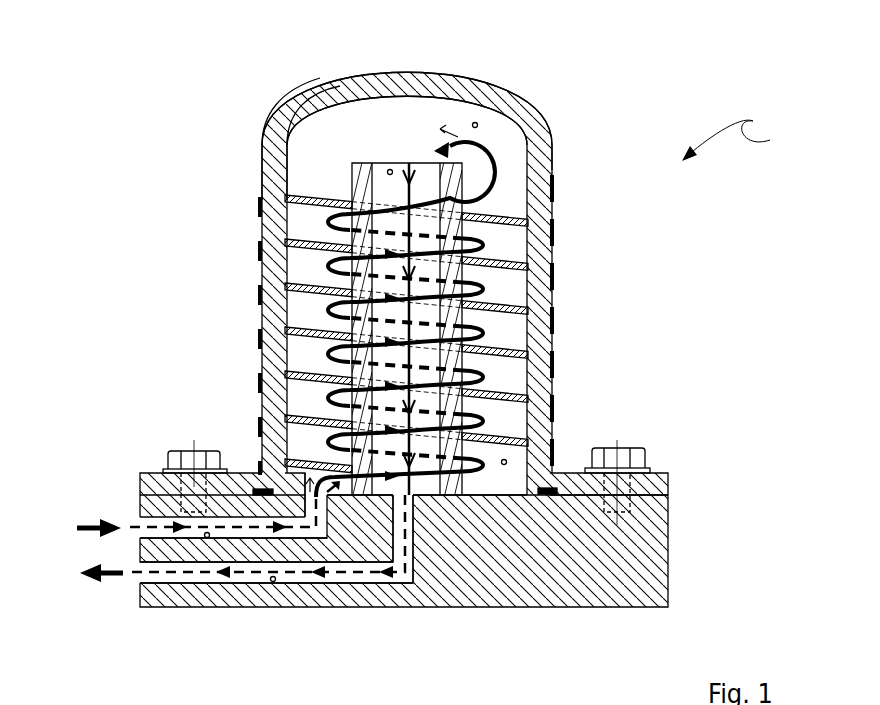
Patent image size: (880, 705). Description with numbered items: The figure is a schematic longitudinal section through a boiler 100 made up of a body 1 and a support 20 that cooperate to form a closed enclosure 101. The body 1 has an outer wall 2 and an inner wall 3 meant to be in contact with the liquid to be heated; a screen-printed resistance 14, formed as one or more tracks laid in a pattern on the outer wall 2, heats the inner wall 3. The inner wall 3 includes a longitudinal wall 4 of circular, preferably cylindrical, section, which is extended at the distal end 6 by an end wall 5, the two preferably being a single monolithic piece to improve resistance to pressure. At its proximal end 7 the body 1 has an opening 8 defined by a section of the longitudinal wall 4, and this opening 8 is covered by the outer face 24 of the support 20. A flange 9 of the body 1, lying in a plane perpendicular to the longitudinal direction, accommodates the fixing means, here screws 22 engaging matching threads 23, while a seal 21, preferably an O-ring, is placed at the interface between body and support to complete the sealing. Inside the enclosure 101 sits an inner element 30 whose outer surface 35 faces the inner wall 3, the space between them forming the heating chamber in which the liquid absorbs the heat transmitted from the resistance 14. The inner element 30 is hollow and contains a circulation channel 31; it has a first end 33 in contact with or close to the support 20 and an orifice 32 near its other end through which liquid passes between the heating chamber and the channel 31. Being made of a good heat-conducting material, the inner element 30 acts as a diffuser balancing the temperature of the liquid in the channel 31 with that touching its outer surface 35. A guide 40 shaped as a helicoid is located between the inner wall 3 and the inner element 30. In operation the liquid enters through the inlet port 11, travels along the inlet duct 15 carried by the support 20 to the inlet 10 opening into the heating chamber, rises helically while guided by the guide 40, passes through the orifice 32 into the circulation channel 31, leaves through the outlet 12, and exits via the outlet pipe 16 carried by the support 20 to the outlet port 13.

The body 1 is at (437, 82).
The outer wall 2 is at (262, 182).
The inner wall 3 is at (297, 143).
The longitudinal wall 4 is at (262, 144).
The end wall 5 is at (325, 115).
The distal end 6 is at (576, 77).
The proximal end 7 is at (505, 460).
The opening 8 is at (517, 483).
The flange 9 is at (668, 498).
The inlet 10 is at (260, 468).
The inlet port 11 is at (80, 526).
The outlet 12 is at (392, 497).
The outlet port 13 is at (95, 582).
The screen-printed resistance 14 is at (262, 260).
The inlet duct 15 is at (207, 537).
The outlet pipe 16 is at (273, 581).
The support 20 is at (643, 607).
The seal 21 is at (593, 448).
The screws 22 is at (178, 455).
The threads 23 is at (165, 472).
The outer face 24 is at (482, 488).
The inner element 30 is at (323, 306).
The circulation channel 31 is at (390, 172).
The orifice 32 is at (403, 162).
The first end 33 is at (548, 488).
The outer surface 35 is at (485, 198).
The guide 40 is at (485, 226).
The boiler 100 is at (751, 132).
The enclosure 101 is at (477, 124).